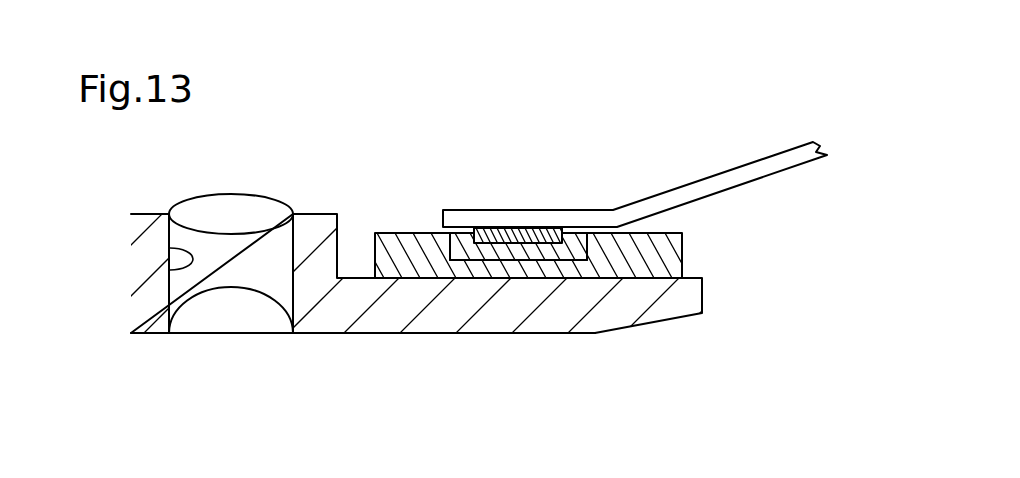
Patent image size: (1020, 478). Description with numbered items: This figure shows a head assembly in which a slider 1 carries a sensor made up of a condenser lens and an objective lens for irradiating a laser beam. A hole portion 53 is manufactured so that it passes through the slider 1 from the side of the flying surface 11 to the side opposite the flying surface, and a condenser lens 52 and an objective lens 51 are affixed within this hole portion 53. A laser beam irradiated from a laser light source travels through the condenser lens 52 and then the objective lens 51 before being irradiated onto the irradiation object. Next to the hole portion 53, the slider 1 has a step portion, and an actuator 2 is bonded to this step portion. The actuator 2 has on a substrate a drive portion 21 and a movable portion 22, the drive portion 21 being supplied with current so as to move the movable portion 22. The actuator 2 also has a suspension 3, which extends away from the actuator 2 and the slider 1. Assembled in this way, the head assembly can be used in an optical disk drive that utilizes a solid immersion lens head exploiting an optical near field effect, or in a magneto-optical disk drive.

The slider 1 is at (530, 299).
The flying surface 11 is at (370, 338).
The actuator 2 is at (652, 257).
The drive portion 21 is at (443, 235).
The movable portion 22 is at (503, 228).
The suspension 3 is at (678, 188).
The objective lens 51 is at (207, 318).
The condenser lens 52 is at (267, 194).
The hole portion 53 is at (170, 270).